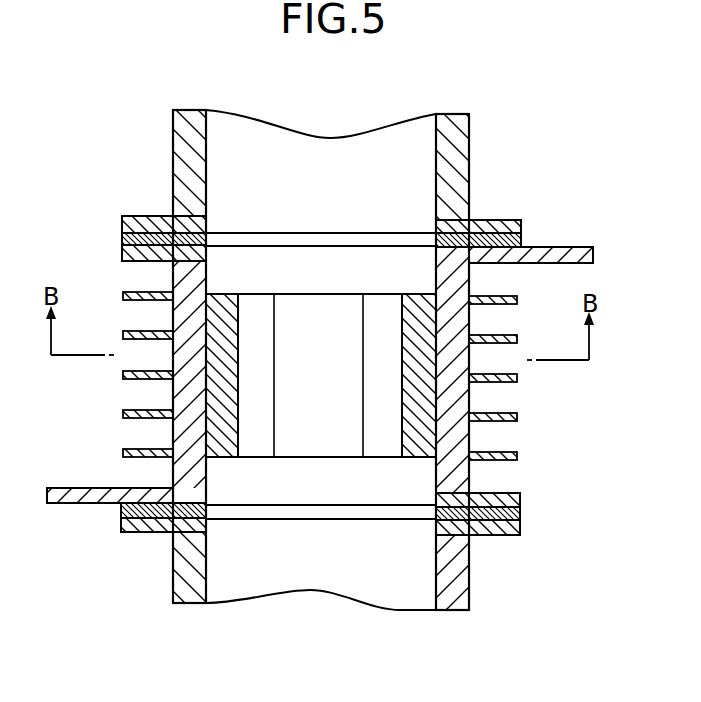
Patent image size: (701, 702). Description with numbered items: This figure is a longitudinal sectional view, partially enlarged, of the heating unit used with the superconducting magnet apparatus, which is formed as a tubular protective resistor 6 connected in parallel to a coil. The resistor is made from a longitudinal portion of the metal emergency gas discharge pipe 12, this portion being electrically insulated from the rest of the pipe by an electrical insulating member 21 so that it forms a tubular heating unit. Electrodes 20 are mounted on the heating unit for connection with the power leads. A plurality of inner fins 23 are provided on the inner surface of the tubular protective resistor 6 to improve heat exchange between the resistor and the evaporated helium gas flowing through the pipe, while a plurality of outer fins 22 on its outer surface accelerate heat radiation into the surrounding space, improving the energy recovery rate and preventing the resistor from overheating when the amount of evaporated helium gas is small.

The emergency gas discharge pipe 12 is at (458, 130).
The electrical insulating member 21 is at (478, 215).
The electrodes 20 is at (592, 248).
The tubular protective resistor 6 is at (472, 278).
The inner fins 23 is at (250, 417).
The outer fins 22 is at (512, 413).